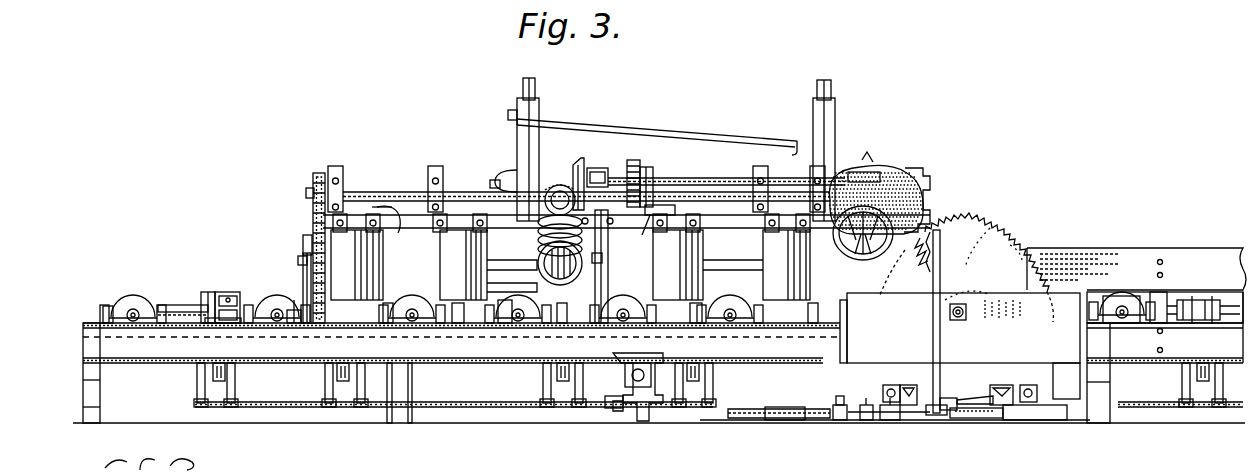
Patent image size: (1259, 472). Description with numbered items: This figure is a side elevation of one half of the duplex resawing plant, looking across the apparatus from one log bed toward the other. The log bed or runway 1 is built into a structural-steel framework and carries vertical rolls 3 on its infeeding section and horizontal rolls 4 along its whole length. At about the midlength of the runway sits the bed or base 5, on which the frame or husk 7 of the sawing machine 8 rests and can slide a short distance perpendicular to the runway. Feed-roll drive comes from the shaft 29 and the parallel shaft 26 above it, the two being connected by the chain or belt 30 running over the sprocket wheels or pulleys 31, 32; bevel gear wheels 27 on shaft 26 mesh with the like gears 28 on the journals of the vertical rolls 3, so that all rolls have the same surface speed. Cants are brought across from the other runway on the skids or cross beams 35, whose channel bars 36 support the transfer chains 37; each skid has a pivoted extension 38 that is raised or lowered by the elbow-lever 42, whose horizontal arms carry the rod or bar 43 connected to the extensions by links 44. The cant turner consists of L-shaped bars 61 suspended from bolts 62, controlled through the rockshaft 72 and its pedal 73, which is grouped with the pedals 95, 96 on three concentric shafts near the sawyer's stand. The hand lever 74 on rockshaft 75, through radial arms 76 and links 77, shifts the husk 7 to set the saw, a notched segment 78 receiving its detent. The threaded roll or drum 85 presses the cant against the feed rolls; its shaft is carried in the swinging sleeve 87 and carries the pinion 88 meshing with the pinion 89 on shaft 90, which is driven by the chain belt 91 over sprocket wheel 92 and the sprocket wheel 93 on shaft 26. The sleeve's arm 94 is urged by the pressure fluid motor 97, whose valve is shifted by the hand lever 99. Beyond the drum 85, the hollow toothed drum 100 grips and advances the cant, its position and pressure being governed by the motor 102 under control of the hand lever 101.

The log bed or runway 1 is at (659, 357).
The vertical rolls 3 is at (384, 263).
The horizontal rolls 4 is at (134, 300).
The bed or base 5 is at (1050, 420).
The frame or husk 7 is at (1052, 379).
The sawing machine 8 is at (966, 267).
The shaft 26 is at (396, 192).
The bevel gear wheels 27 is at (343, 181).
The bevel gear 28 is at (395, 218).
The shaft 29 is at (178, 325).
The chain or belt 30 is at (302, 241).
The sprocket wheel or pulley 31 is at (304, 325).
The sprocket wheel or pulley 32 is at (310, 198).
The skids or cross beams 35 is at (205, 292).
The channel bars 36 is at (195, 297).
The transfer chains 37 is at (226, 292).
The hinged or pivoted extension 38 is at (226, 324).
The elbow-lever 42 is at (625, 398).
The long rod or bar 43 is at (296, 409).
The links 44 is at (236, 381).
The L-shaped bars 61 is at (302, 271).
The bolt 62 is at (298, 260).
The rockshaft 72 is at (750, 418).
The pedal or actuating lever 73 is at (890, 422).
The hand lever 74 is at (942, 279).
The rockshaft 75 is at (975, 405).
The radial arms 76 is at (905, 385).
The links 77 is at (880, 386).
The notched rack or segment 78 is at (925, 298).
The roll or drum 85 is at (562, 271).
The swinging sleeve 87 is at (596, 168).
The bevel gear or pinion 88 is at (555, 188).
The bevel gear or pinion 89 is at (580, 160).
The shaft 90 is at (692, 178).
The chain belt 91 is at (648, 167).
The sprocket wheel 92 is at (634, 160).
The sprocket wheel 93 is at (646, 230).
The arm 94 is at (536, 131).
The pedal 95 is at (865, 422).
The pedal 96 is at (838, 422).
The pressure fluid motor 97 is at (505, 174).
The hand lever 99 is at (724, 137).
The drum 100 is at (905, 206).
The hand lever 101 is at (818, 103).
The motor 102 is at (852, 168).